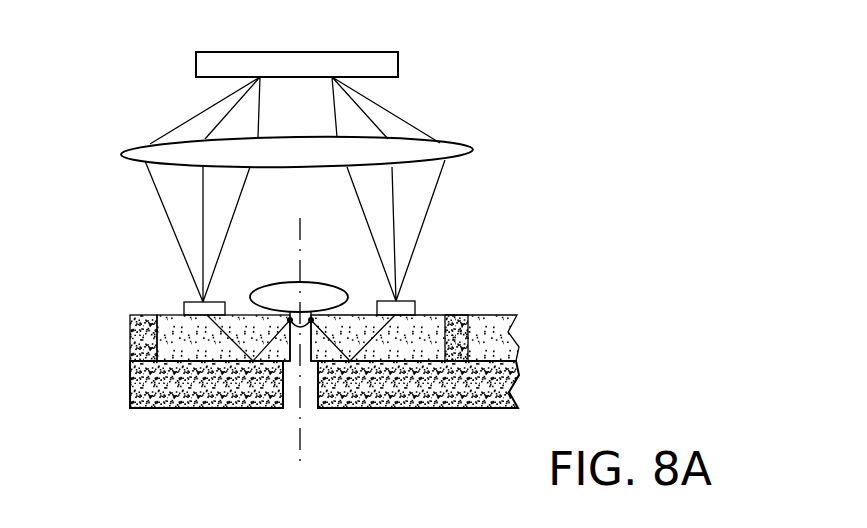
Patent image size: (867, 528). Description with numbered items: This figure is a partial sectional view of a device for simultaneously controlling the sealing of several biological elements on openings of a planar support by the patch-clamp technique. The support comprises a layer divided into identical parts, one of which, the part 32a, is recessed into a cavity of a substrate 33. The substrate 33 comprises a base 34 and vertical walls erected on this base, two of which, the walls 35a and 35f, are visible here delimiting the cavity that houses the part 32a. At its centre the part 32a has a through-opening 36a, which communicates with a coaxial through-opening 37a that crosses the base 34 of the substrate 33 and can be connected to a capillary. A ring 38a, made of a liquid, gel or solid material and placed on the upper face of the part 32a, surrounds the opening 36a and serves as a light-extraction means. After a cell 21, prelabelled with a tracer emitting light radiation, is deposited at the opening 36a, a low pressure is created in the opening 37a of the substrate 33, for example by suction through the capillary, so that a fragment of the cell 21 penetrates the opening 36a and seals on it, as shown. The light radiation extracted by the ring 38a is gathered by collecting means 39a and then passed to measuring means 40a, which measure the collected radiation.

The measuring means 40a is at (390, 63).
The collecting means 39a is at (473, 150).
The cell 21 is at (273, 290).
The through-opening of the substrate 37a is at (303, 269).
The ring 38a is at (185, 306).
The wall 35f is at (456, 316).
The base 34 is at (513, 387).
The wall 35a is at (128, 337).
The substrate 33 is at (130, 395).
The part of the layer 32a is at (197, 345).
The through-opening 36a is at (305, 363).